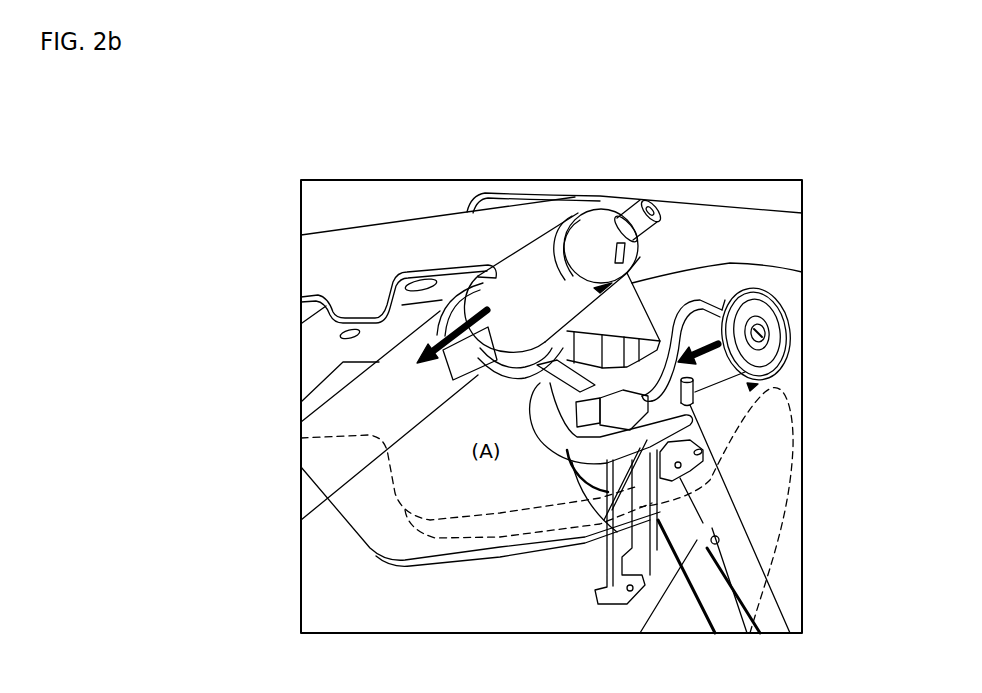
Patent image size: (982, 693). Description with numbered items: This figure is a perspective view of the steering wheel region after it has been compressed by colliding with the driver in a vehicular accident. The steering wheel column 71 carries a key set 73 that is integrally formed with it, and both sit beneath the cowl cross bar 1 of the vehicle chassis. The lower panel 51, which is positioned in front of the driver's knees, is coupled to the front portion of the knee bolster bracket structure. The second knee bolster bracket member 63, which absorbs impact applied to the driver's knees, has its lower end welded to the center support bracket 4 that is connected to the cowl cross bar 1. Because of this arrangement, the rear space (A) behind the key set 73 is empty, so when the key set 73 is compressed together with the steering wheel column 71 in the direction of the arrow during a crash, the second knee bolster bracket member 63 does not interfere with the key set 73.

The cowl cross bar 1 is at (733, 217).
The steering wheel column 71 is at (522, 283).
The key set 73 is at (790, 333).
The lower panel 51 is at (778, 424).
The second knee bolster bracket member 63 is at (657, 550).
The center support bracket 4 is at (765, 610).